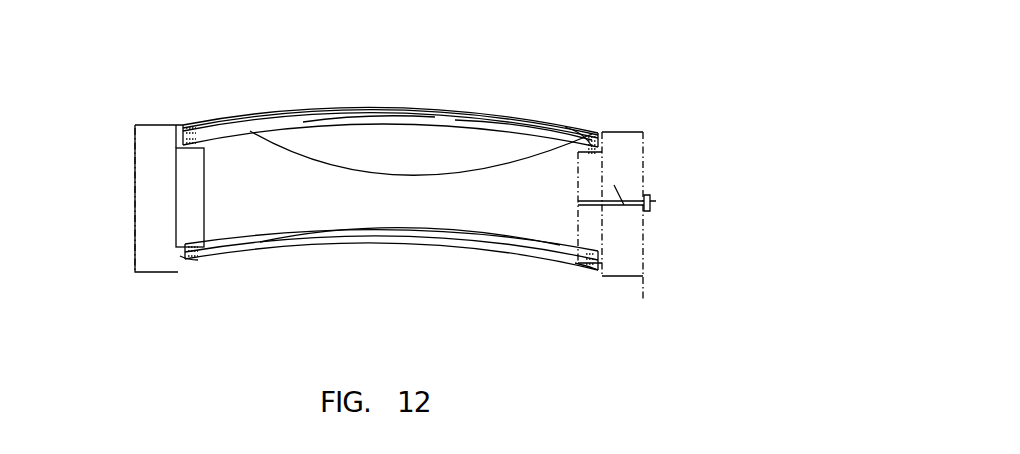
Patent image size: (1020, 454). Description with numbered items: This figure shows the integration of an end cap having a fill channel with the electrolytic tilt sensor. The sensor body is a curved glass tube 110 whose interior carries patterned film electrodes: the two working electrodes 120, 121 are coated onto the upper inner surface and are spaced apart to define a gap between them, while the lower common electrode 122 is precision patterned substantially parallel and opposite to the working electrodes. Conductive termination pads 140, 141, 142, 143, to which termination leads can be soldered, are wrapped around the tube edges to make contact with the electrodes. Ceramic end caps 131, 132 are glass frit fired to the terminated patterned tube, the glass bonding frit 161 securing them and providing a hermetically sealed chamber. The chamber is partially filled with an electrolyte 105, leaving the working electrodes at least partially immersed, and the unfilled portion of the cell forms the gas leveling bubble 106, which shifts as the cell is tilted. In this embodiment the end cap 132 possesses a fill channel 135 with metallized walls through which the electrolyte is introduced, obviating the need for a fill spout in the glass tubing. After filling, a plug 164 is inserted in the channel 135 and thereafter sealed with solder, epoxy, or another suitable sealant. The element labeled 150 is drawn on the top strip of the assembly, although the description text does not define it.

The electrolyte 105 is at (285, 199).
The gas leveling bubble 106 is at (425, 142).
The curved glass tube 110 is at (305, 247).
The electrode 120 is at (307, 128).
The electrode 121 is at (490, 128).
The common electrode 122 is at (387, 231).
The end cap 131 is at (157, 125).
The end cap 132 is at (625, 132).
The fill channel 135 is at (630, 195).
The conductive termination pad 140 is at (195, 125).
The conductive termination pad 141 is at (585, 128).
The conductive termination pad 142 is at (183, 272).
The conductive termination pad 143 is at (592, 272).
The top strip 150 is at (356, 65).
The glass bonding frit 161 is at (178, 240).
The plug 164 is at (656, 199).